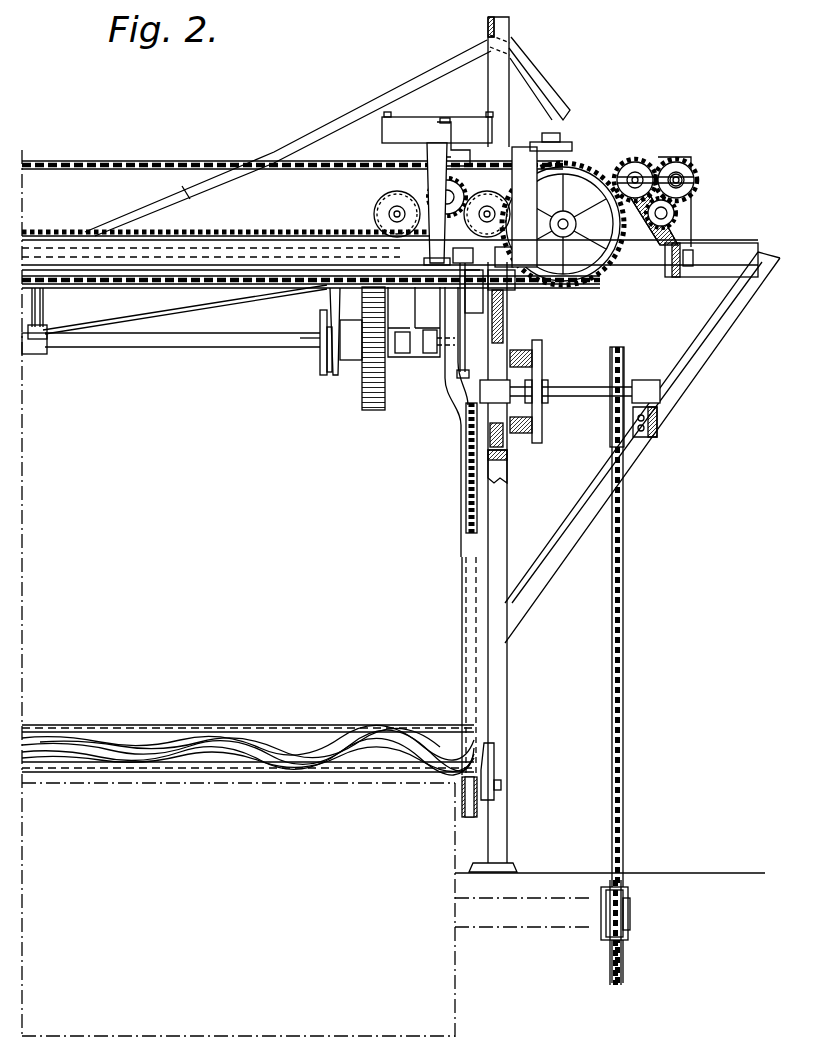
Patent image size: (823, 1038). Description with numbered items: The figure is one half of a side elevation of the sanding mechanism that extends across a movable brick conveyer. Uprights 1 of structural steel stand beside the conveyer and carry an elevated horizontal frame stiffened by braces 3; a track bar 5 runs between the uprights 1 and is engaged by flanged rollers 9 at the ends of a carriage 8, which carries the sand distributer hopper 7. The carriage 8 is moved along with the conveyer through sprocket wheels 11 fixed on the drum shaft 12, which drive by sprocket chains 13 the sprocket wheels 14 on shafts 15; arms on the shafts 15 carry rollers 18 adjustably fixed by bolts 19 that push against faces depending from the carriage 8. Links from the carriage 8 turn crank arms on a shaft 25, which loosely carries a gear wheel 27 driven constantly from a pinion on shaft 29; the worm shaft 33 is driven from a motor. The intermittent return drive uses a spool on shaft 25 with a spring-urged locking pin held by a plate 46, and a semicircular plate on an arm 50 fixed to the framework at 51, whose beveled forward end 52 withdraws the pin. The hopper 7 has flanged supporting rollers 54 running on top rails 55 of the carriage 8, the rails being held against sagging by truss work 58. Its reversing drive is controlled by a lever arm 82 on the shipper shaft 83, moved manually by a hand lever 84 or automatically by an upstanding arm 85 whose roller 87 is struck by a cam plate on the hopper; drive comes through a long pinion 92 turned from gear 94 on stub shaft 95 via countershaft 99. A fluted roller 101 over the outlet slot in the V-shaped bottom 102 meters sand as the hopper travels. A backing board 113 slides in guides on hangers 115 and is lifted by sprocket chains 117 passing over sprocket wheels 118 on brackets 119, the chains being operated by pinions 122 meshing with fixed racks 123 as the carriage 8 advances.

The uprights 1 is at (505, 670).
The braces 3 is at (690, 348).
The track bar 5 is at (505, 335).
The sand distributer hopper 7 is at (548, 97).
The carriage 8 is at (545, 297).
The flanged rollers 9 is at (500, 305).
The sprocket wheels 11 is at (620, 962).
The shaft 12 is at (635, 908).
The sprocket chains 13 is at (625, 553).
The sprocket wheels 14 is at (622, 352).
The shafts 15 is at (580, 390).
The rollers 18 is at (545, 352).
The bolts 19 is at (545, 378).
The shaft 25 is at (250, 348).
The gear wheel 27 is at (372, 400).
The shaft 29 is at (368, 238).
The shaft 33 is at (650, 185).
The plate 46 is at (320, 360).
The arm 50 is at (340, 322).
The fixing point 51 is at (330, 295).
The forward end of plate 52 is at (322, 330).
The flanged supporting rollers 54 is at (392, 206).
The top rails 55 is at (332, 232).
The truss work 58 is at (110, 313).
The lever arm 82 is at (582, 168).
The shipper shaft 83 is at (343, 258).
The hand lever 84 is at (462, 395).
The arm 85 is at (415, 165).
The roller 87 is at (446, 122).
The long pinion 92 is at (635, 160).
The gear 94 is at (682, 160).
The stub shaft 95 is at (683, 178).
The countershaft 99 is at (677, 213).
The fluted roller 101 is at (435, 191).
The V-shaped bottom 102 is at (425, 166).
The backing board 113 is at (205, 755).
The hangers 115 is at (455, 368).
The sprocket chains 117 is at (465, 483).
The sprocket wheels 118 is at (477, 810).
The brackets 119 is at (496, 772).
The pinions 122 is at (505, 435).
The racks 123 is at (508, 468).